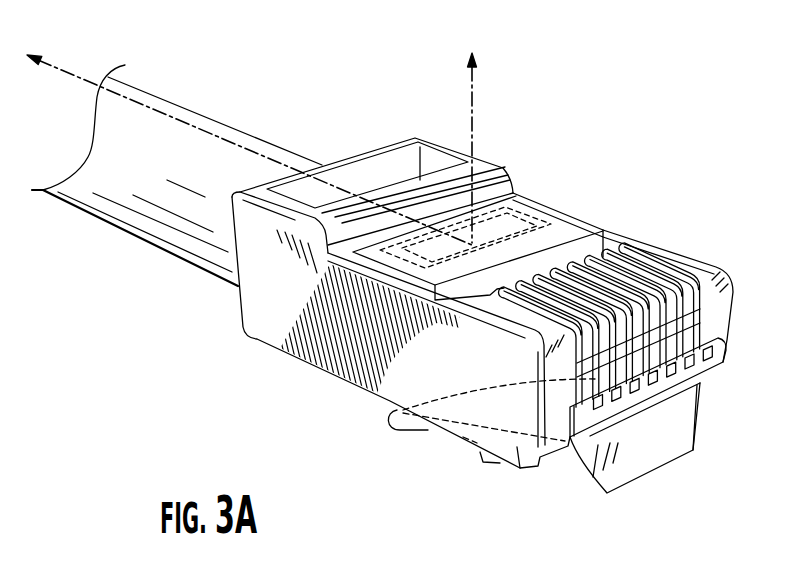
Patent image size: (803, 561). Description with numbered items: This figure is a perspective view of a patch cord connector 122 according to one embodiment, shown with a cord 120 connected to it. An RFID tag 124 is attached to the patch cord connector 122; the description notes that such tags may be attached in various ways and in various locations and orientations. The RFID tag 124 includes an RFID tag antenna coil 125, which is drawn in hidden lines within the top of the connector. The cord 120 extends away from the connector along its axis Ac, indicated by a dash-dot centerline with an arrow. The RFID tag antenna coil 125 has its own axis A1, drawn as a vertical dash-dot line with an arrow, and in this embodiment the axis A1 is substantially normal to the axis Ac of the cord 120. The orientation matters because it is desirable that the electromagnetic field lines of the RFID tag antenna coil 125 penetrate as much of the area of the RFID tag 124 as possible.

The cord 120 is at (226, 120).
The patch cord connector 122 is at (632, 235).
The RFID tag 124 is at (563, 213).
The RFID tag antenna coil 125 is at (523, 200).
The axis of the cord Ac is at (152, 108).
The axis of the RFID tag antenna coil A1 is at (472, 152).